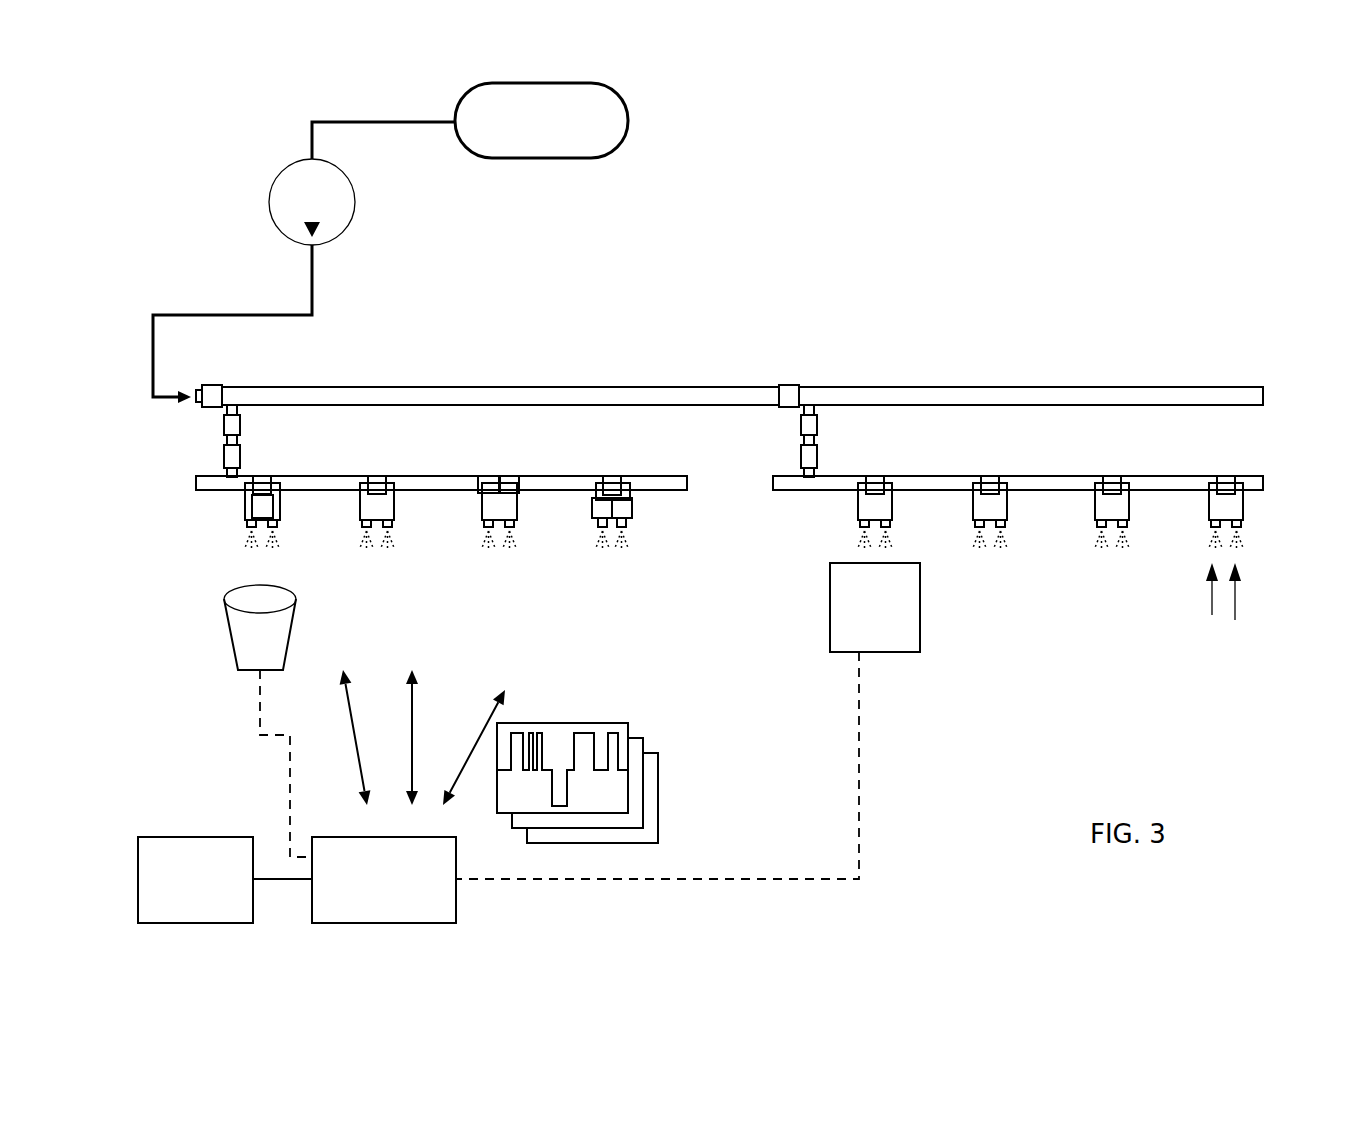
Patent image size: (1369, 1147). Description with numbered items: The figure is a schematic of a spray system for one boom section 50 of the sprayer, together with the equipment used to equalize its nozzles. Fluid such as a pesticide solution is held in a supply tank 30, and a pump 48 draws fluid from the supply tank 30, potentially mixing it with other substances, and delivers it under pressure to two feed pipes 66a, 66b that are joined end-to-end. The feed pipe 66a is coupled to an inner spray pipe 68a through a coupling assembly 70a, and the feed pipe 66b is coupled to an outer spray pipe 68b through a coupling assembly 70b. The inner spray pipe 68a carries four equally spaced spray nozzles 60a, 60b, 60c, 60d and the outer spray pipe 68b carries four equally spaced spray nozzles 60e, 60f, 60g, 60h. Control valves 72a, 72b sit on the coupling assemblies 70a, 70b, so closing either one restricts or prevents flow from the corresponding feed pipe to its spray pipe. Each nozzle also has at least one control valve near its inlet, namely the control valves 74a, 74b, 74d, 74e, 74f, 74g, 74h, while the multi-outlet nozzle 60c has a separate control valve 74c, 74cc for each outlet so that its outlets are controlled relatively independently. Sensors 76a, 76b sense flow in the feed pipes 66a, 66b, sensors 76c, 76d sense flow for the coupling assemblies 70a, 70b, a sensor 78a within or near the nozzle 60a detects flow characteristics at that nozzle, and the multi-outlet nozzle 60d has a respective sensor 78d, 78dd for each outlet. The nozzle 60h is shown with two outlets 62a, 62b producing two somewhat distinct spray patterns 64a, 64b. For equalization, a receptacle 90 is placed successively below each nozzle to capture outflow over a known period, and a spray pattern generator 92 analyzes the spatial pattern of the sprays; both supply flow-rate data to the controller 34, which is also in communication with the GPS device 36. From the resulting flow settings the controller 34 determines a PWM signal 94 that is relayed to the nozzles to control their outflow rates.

The supply tank 30 is at (628, 112).
The controller 34 is at (420, 923).
The GPS device 36 is at (210, 923).
The pump 48 is at (277, 170).
The boom section 50 is at (910, 235).
The spray nozzle 60a is at (325, 429).
The spray nozzle 60b is at (410, 408).
The spray nozzle 60c is at (468, 430).
The spray nozzle 60d is at (623, 487).
The spray nozzle 60e is at (839, 473).
The spray nozzle 60f is at (986, 432).
The spray nozzle 60g is at (1111, 336).
The spray nozzle 60h is at (1214, 524).
The outlet 62a is at (1200, 523).
The outlet 62b is at (1247, 523).
The spray pattern 64a is at (1212, 615).
The spray pattern 64b is at (1235, 620).
The feed pipe 66a is at (600, 388).
The feed pipe 66b is at (1163, 388).
The spray pipe 68a is at (557, 476).
The spray pipe 68b is at (1133, 476).
The coupling assembly 70a is at (303, 359).
The coupling assembly 70b is at (803, 418).
The control valve 72a is at (224, 458).
The control valve 72b is at (775, 480).
The control valve 74a is at (265, 477).
The control valve 74b is at (377, 476).
The control valve 74c is at (489, 476).
The control valve 74cc is at (514, 476).
The control valve 74d is at (615, 476).
The control valve 74e is at (875, 476).
The control valve 74f is at (990, 476).
The control valve 74g is at (1113, 476).
The control valve 74h is at (1225, 476).
The sensor 76a is at (222, 385).
The sensor 76b is at (790, 385).
The sensor 76c is at (243, 418).
The sensor 76d is at (818, 425).
The sensor 78a is at (280, 505).
The sensor 78d is at (592, 508).
The sensor 78dd is at (632, 510).
The receptacle 90 is at (238, 650).
The spray pattern generator 92 is at (920, 620).
The PWM signal 94 is at (684, 768).